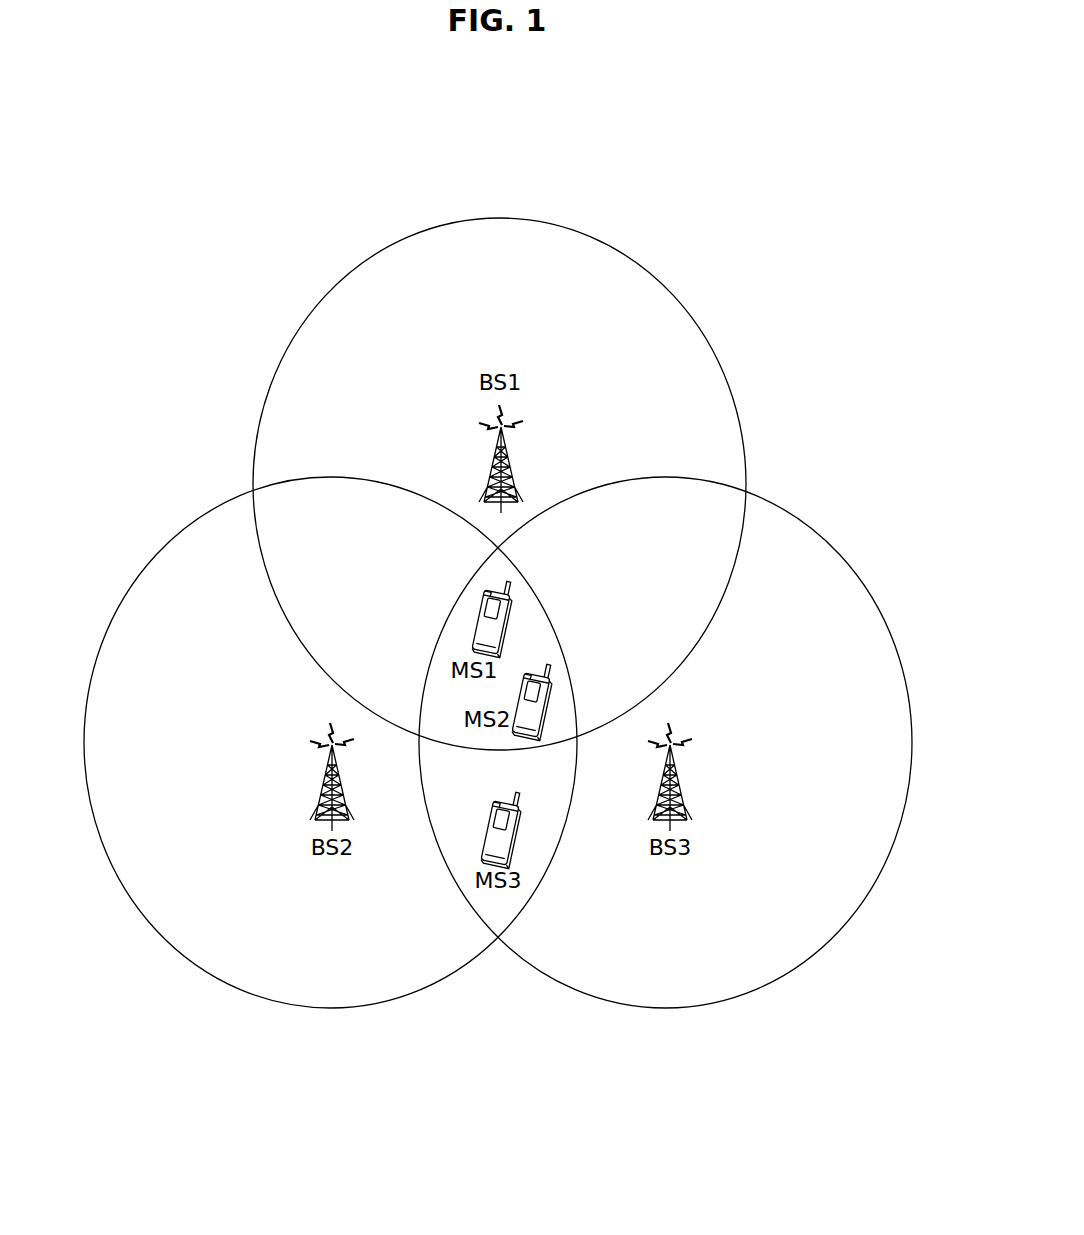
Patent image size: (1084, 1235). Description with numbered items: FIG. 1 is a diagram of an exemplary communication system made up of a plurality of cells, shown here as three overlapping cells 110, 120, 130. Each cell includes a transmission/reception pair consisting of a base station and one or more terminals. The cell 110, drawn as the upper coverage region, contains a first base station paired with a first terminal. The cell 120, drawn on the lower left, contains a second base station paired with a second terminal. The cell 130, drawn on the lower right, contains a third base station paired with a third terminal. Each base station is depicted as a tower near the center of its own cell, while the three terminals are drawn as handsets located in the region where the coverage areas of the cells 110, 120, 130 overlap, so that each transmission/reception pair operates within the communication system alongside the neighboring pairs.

The cell 110 is at (498, 218).
The cell 120 is at (330, 1008).
The cell 130 is at (664, 1008).